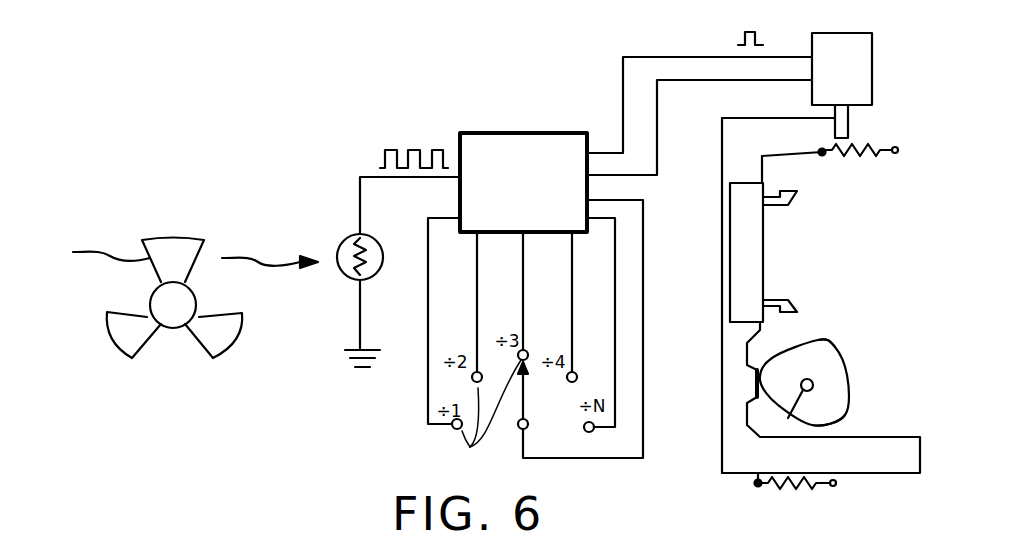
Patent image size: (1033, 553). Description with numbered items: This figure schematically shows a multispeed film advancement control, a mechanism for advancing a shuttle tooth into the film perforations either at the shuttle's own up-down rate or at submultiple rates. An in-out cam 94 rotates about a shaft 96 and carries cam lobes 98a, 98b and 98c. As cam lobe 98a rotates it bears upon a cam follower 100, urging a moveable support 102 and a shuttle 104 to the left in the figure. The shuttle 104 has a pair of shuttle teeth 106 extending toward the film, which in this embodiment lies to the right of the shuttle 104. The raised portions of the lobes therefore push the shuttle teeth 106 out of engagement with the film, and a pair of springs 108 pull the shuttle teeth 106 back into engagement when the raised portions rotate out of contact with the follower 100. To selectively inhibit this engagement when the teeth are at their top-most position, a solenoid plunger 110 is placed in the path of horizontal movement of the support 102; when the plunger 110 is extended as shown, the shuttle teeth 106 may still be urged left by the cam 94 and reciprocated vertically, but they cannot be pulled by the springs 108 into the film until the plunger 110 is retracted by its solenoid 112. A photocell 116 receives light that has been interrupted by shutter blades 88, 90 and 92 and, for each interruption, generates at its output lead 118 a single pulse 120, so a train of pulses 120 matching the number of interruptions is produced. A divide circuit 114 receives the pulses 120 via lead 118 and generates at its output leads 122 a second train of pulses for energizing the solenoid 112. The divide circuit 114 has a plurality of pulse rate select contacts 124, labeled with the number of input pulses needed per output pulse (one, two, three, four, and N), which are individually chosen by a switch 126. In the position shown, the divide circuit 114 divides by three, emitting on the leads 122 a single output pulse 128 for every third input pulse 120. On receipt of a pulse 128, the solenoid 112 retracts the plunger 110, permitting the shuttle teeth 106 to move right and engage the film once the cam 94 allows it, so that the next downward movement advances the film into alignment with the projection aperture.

The shutter blade 88 is at (184, 240).
The shutter blade 90 is at (238, 342).
The shutter blade 92 is at (112, 344).
The in-out cam 94 is at (848, 384).
The shaft 96 is at (786, 423).
The cam lobe 98a is at (766, 352).
The cam lobe 98b is at (840, 343).
The cam lobe 98c is at (840, 428).
The cam follower 100 is at (753, 383).
The moveable support 102 is at (722, 440).
The shuttle 104 is at (742, 262).
The shuttle teeth 106 is at (790, 205).
The springs 108 is at (840, 152).
The solenoid plunger 110 is at (848, 125).
The solenoid 112 is at (872, 84).
The divide circuit 114 is at (500, 133).
The photocell 116 is at (340, 240).
The output lead 118 is at (360, 177).
The pulse 120 is at (384, 150).
The output leads 122 is at (650, 68).
The pulse rate select contacts 124 is at (477, 409).
The switch 126 is at (525, 400).
The output pulse 128 is at (738, 45).